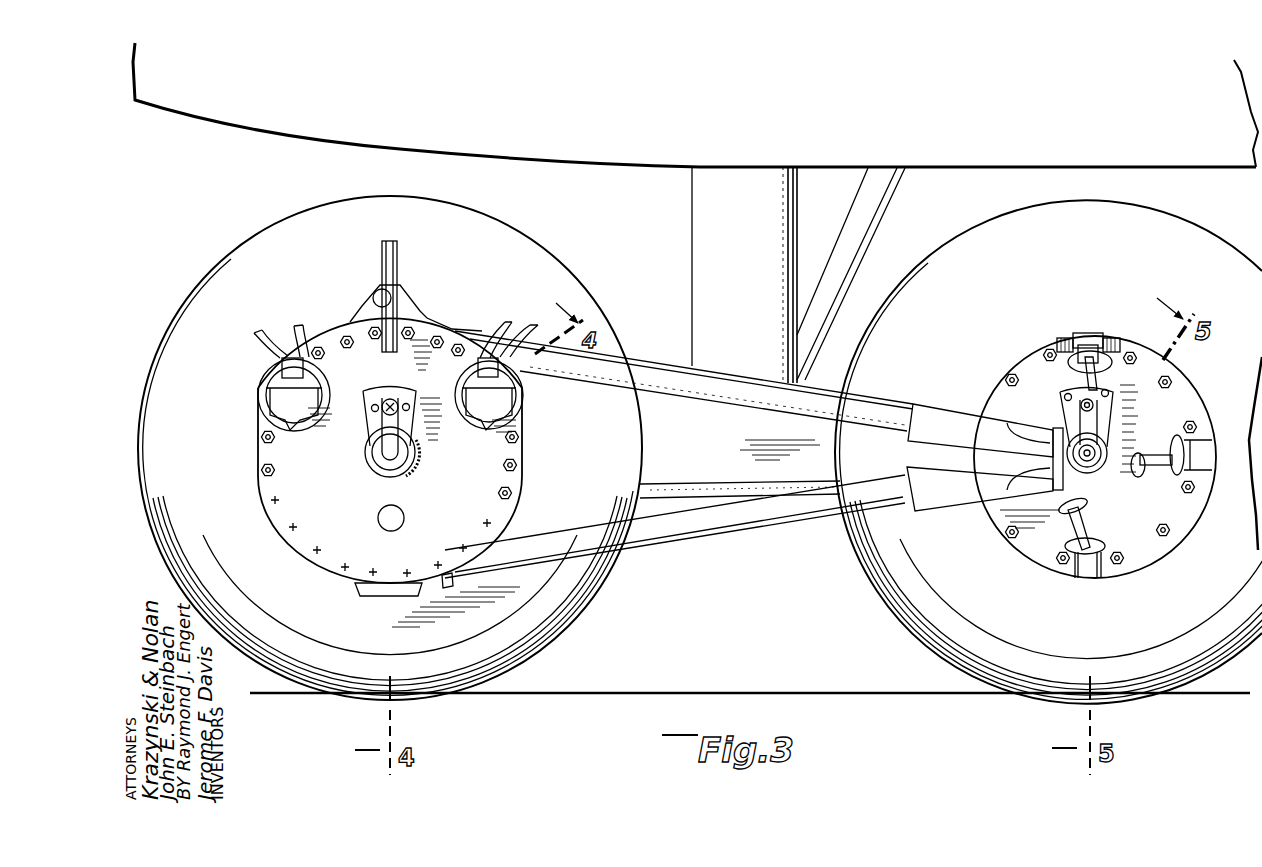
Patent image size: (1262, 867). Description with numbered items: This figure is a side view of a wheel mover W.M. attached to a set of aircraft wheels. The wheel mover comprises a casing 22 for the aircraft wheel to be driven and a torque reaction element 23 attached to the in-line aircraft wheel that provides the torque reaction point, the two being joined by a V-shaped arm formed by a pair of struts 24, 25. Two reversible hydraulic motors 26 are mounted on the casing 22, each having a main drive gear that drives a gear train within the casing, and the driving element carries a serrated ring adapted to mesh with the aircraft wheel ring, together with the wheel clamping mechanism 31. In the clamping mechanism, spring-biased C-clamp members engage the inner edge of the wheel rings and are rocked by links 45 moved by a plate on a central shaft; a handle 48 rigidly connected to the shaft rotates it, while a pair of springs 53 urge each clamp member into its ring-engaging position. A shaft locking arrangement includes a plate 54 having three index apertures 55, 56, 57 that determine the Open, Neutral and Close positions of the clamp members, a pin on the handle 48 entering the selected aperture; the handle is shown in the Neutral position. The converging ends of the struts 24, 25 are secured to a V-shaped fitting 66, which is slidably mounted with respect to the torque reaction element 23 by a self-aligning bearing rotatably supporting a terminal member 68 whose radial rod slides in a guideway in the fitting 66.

The wheel mover W.M. is at (657, 300).
The casing 22 is at (407, 557).
The torque reaction element 23 is at (1182, 508).
The strut 24 is at (686, 358).
The strut 25 is at (731, 521).
The reversible hydraulic motor 26 is at (256, 397).
The wheel clamping mechanism 31 is at (1071, 347).
The link 45 is at (1099, 377).
The handle 48 is at (387, 421).
The spring 53 is at (1110, 338).
The plate 54 is at (409, 417).
The index aperture 55 is at (372, 406).
The index aperture 56 is at (397, 384).
The index aperture 57 is at (410, 405).
The V-shaped fitting 66 is at (962, 404).
The terminal member 68 is at (1096, 470).